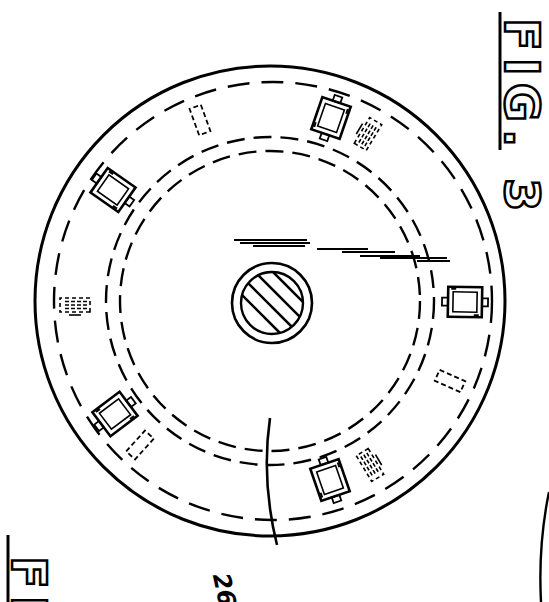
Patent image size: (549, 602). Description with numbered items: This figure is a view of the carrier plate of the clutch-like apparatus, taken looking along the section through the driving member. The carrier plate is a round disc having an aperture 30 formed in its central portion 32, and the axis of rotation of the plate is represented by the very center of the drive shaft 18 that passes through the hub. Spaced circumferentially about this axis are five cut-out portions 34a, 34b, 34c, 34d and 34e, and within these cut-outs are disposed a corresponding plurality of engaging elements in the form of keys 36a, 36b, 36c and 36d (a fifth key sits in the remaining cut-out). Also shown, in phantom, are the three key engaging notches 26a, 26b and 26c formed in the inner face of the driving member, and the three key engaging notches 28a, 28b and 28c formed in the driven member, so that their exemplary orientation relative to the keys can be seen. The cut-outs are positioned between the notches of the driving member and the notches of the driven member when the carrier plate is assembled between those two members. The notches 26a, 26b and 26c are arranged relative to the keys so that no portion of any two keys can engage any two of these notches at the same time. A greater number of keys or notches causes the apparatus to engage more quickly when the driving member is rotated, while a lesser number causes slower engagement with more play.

The drive shaft 18 is at (297, 318).
The key engaging notch 26a is at (384, 450).
The key engaging notch 26b is at (388, 146).
The key engaging notch 26c is at (74, 297).
The key engaging notch 28a is at (131, 456).
The key engaging notch 28b is at (193, 108).
The key engaging notch 28c is at (465, 403).
The aperture 30 is at (272, 263).
The central portion 32 is at (265, 547).
The cut-out portion 34a is at (313, 490).
The cut-out portion 34b is at (470, 318).
The cut-out portion 34c is at (318, 112).
The cut-out portion 34d is at (100, 193).
The cut-out portion 34e is at (100, 396).
The key 36a is at (335, 485).
The key 36b is at (473, 303).
The key 36c is at (322, 102).
The key 36d is at (112, 172).